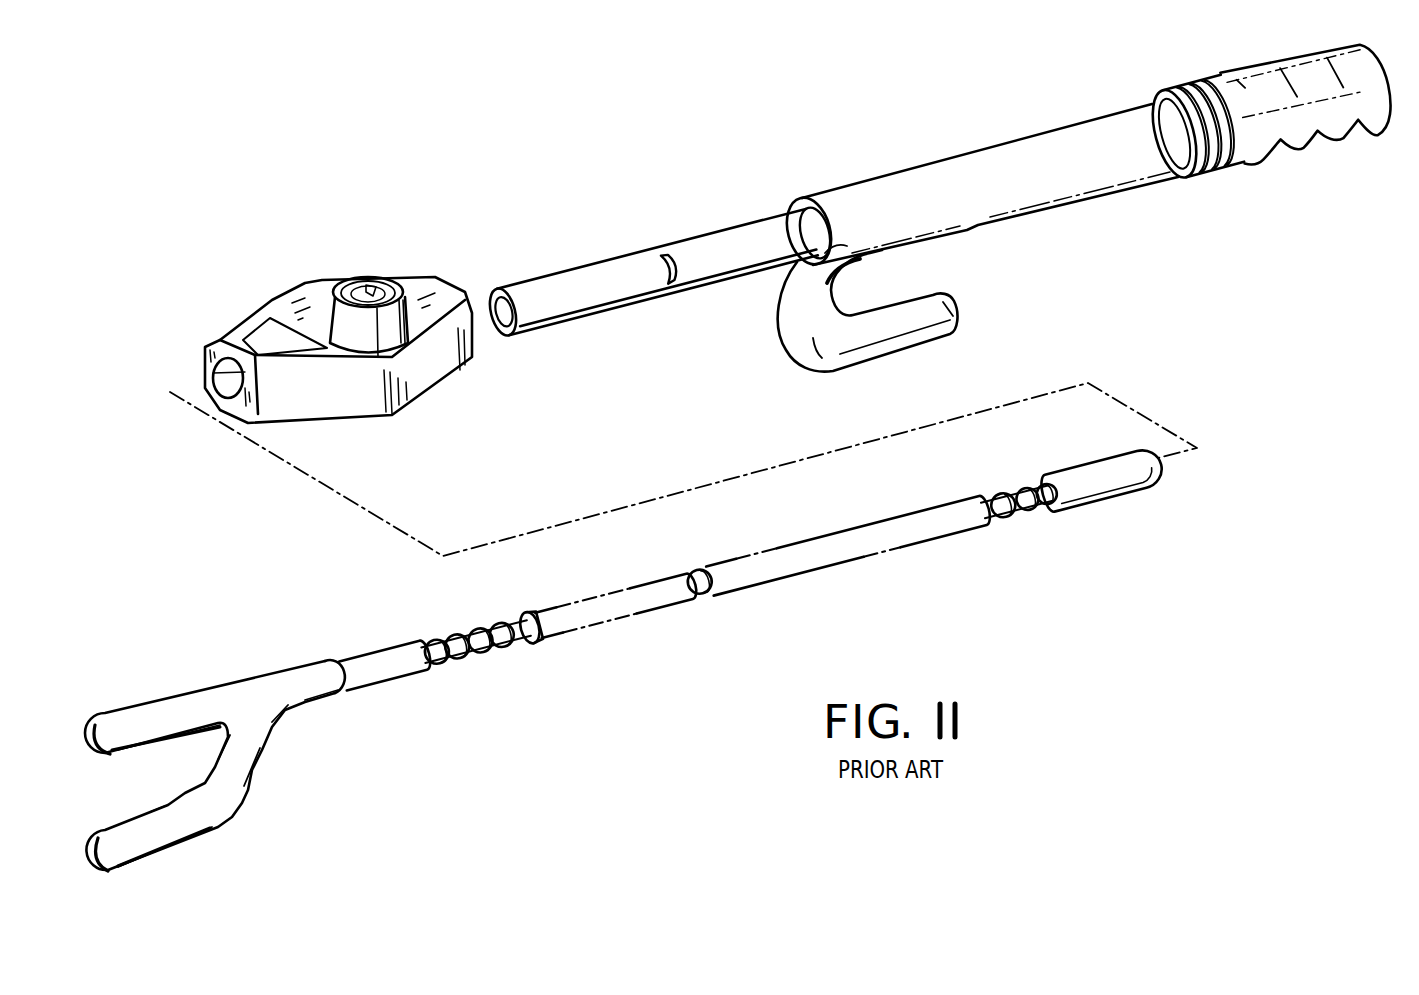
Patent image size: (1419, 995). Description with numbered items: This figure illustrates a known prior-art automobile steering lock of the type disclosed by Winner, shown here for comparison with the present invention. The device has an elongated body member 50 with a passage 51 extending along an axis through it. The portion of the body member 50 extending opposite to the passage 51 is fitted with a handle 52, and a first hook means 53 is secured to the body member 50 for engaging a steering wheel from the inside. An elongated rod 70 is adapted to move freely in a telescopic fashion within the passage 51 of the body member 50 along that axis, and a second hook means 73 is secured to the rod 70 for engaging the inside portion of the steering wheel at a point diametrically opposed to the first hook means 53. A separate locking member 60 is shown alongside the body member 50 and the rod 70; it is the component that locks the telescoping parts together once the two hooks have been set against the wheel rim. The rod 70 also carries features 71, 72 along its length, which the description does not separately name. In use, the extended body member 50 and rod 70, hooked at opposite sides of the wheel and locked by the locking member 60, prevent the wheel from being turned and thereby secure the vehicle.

The elongated body member 50 is at (748, 226).
The passage 51 is at (507, 322).
The handle 52 is at (1254, 170).
The first hook means 53 is at (862, 293).
The locking member 60 is at (445, 297).
The elongated rod 70 is at (651, 580).
The ball detents 71 is at (462, 632).
The cup coupling 72 is at (522, 622).
The second hook means 73 is at (257, 778).